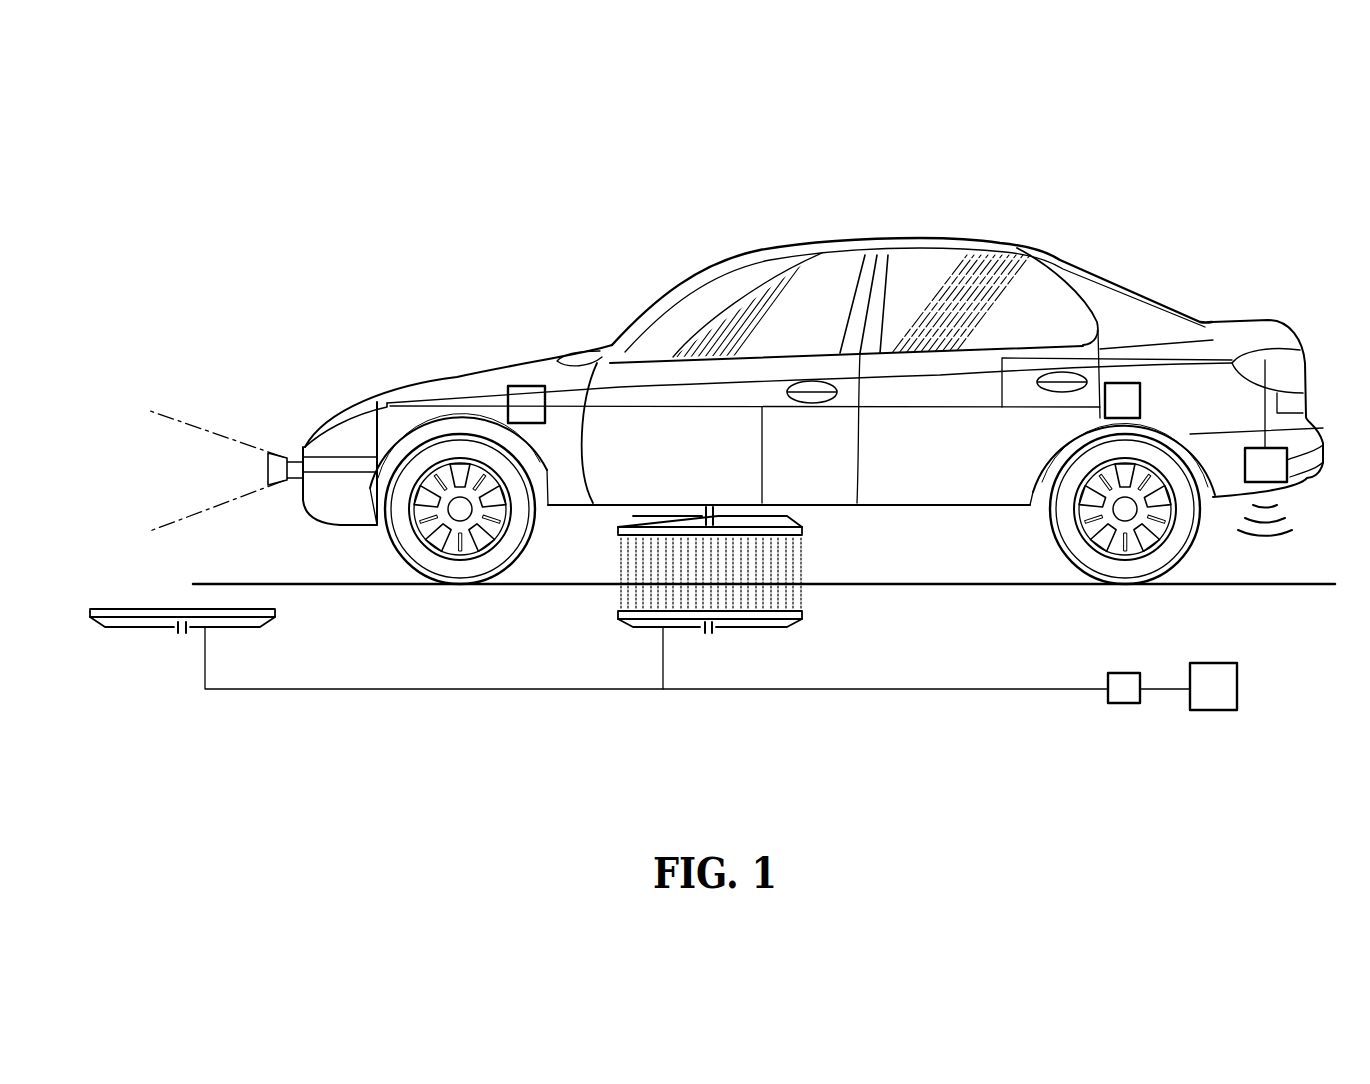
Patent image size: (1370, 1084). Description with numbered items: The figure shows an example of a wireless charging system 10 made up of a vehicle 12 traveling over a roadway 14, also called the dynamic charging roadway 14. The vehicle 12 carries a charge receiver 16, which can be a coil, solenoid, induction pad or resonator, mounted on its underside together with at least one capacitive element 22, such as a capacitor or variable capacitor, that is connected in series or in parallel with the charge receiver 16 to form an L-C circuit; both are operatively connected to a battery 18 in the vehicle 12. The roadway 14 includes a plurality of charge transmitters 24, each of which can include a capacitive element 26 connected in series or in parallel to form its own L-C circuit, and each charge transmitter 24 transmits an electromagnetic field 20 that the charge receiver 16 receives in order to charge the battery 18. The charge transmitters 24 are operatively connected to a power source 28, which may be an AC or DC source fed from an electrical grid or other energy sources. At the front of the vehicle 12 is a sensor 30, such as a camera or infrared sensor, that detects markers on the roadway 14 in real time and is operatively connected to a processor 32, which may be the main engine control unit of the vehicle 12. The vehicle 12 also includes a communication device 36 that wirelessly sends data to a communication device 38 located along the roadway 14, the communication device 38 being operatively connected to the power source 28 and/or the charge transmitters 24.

The wireless charging system 10 is at (1147, 160).
The vehicle 12 is at (938, 248).
The roadway 14 is at (1310, 582).
The charge receiver 16 is at (618, 530).
The battery 18 is at (1143, 400).
The electromagnetic field 20 is at (805, 568).
The capacitive element 22 is at (705, 512).
The charge transmitter 24 is at (618, 613).
The capacitive element 26 is at (717, 628).
The power source 28 is at (1215, 710).
The sensor 30 is at (268, 458).
The processor 32 is at (527, 386).
The communication device 36 is at (1315, 463).
The communication device 38 is at (1142, 683).